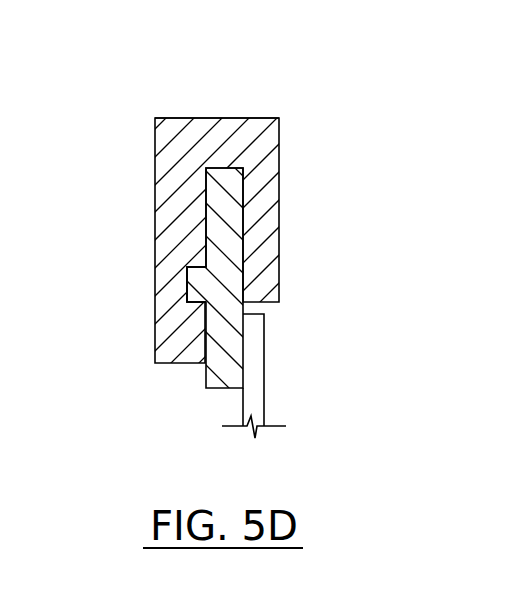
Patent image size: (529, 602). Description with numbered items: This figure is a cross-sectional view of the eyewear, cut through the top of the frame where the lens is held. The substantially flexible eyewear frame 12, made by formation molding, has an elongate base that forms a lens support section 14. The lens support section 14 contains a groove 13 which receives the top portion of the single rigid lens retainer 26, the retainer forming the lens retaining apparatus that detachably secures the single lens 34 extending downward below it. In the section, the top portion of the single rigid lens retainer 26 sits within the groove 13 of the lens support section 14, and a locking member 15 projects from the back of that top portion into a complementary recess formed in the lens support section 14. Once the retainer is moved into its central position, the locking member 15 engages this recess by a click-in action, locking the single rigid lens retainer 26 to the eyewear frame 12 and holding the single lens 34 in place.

The eyewear frame 12 is at (157, 153).
The groove 13 is at (243, 198).
The lens support section 14 is at (233, 118).
The locking member 15 is at (190, 268).
The single rigid lens retainer 26 is at (243, 355).
The single lens 34 is at (264, 400).